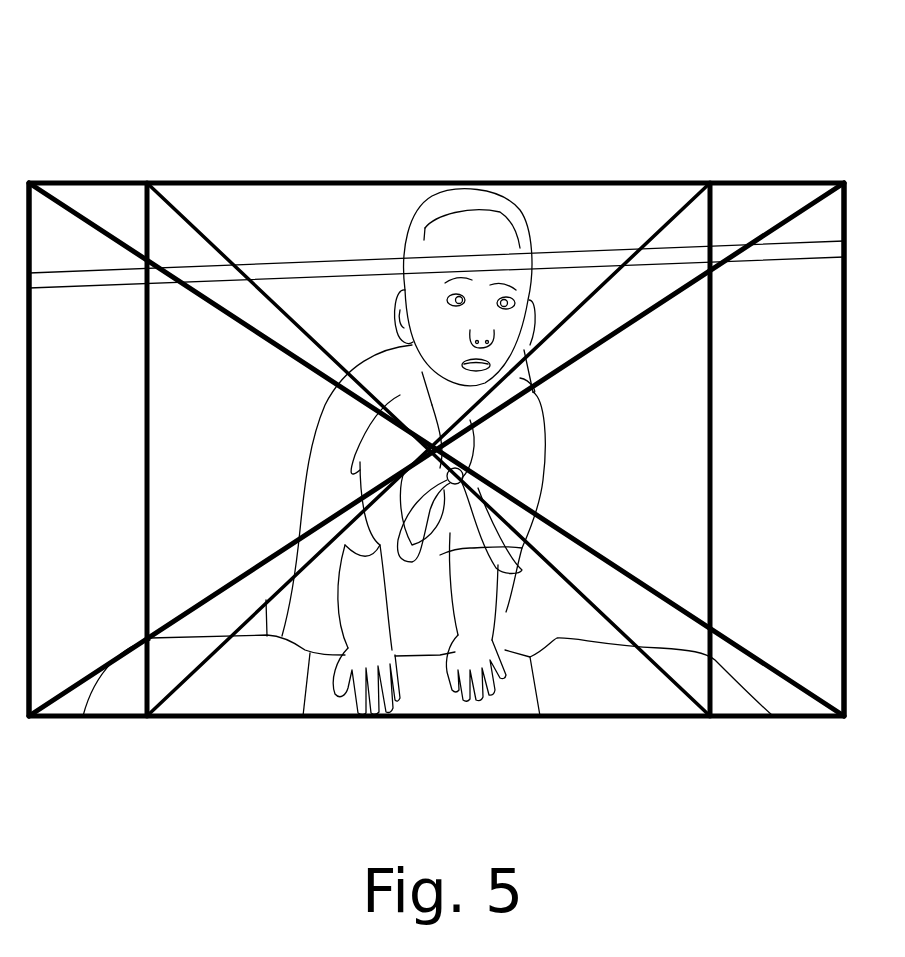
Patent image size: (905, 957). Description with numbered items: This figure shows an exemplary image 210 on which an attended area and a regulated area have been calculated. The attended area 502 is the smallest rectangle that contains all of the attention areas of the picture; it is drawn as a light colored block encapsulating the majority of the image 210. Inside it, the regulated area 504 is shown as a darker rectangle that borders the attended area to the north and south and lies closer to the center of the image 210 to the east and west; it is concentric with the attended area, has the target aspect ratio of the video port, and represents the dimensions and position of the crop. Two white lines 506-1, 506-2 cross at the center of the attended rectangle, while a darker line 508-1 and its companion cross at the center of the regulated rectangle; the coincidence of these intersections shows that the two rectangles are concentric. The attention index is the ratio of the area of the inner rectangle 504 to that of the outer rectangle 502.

The image 210 is at (434, 78).
The attended area 502 is at (30, 360).
The regulated area 504 is at (710, 448).
The white line 506-1 is at (95, 225).
The white line 506-2 is at (56, 698).
The darker line 508-1 is at (655, 237).